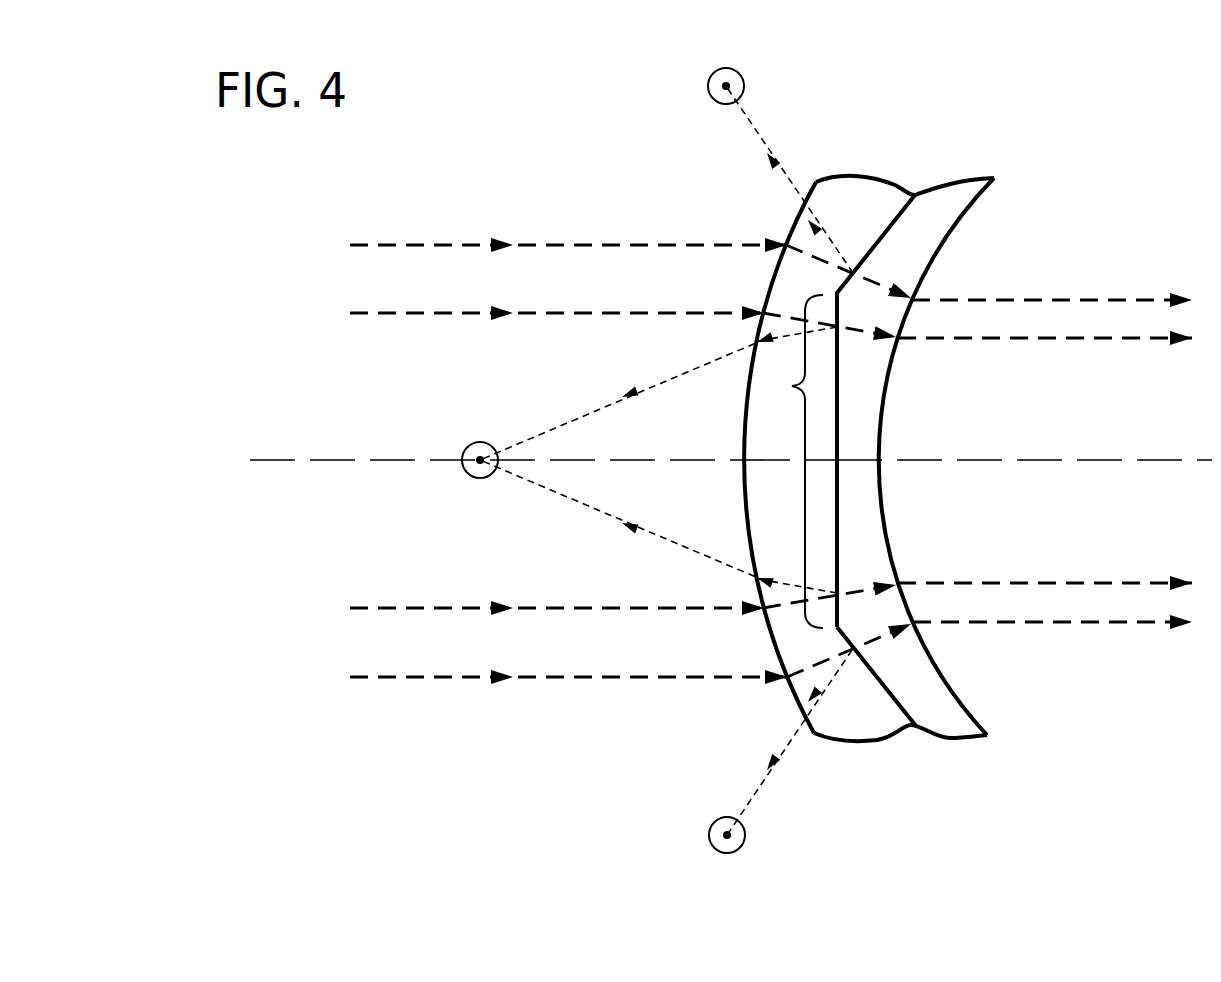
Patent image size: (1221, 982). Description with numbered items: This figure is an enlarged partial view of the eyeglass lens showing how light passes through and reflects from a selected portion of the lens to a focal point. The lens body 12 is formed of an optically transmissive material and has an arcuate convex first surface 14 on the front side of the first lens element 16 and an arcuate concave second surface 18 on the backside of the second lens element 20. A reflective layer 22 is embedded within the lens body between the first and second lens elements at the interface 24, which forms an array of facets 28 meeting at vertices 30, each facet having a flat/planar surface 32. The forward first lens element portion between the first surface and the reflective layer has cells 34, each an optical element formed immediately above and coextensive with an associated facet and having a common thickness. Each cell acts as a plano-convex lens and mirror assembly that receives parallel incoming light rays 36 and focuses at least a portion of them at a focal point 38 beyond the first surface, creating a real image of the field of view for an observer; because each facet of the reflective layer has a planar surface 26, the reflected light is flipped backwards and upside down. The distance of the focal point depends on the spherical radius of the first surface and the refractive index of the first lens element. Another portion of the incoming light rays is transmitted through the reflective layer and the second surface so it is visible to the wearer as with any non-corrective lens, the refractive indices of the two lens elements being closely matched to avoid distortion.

The lens body 12 is at (835, 484).
The first surface 14 is at (798, 458).
The first lens element 16 is at (746, 513).
The second surface 18 is at (900, 526).
The second lens element 20 is at (925, 485).
The reflective layer 22 is at (852, 390).
The interface 24 is at (900, 708).
The planar surface 26 is at (888, 692).
The facets 28 is at (791, 386).
The vertices 30 is at (834, 628).
The flat/planar surface 32 is at (854, 460).
The cells 34 is at (758, 437).
The incoming light rays 36 is at (465, 679).
The focal point 38 is at (719, 101).